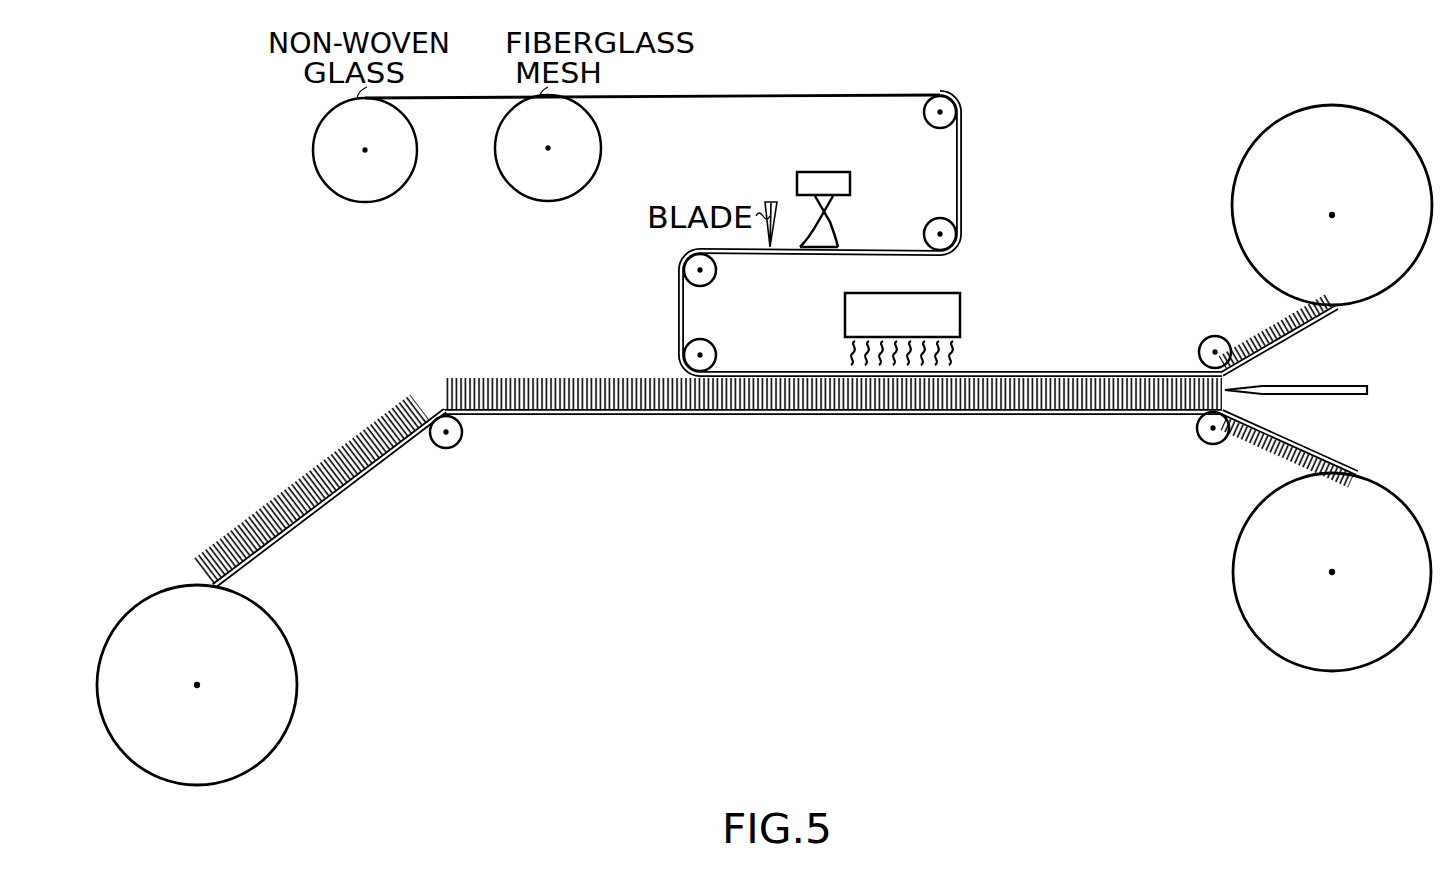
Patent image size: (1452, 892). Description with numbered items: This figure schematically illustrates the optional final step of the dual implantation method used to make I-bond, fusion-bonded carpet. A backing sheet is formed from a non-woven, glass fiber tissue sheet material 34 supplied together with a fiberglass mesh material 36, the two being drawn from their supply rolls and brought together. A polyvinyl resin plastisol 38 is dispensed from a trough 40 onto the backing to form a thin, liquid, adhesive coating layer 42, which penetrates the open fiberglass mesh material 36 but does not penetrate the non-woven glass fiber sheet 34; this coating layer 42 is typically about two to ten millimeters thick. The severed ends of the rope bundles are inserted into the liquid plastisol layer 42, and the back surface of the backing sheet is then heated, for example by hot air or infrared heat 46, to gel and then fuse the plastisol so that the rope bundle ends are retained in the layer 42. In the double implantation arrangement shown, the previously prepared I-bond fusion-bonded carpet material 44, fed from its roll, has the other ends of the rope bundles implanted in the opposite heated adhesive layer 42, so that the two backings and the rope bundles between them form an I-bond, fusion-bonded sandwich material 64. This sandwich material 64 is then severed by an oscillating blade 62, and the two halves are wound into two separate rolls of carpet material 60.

The non-woven glass fiber tissue sheet material 34 is at (413, 169).
The fiberglass mesh material 36 is at (585, 171).
The polyvinyl resin plastisol 38 is at (850, 212).
The trough 40 is at (809, 172).
The adhesive coating layer 42 is at (678, 312).
The carpet 44 is at (299, 663).
The infrared heat 46 is at (960, 315).
The rolls of carpet material 60 is at (1257, 258).
The oscillating blade 62 is at (1302, 384).
The I-bond, fusion-bonded sandwich material 64 is at (880, 416).